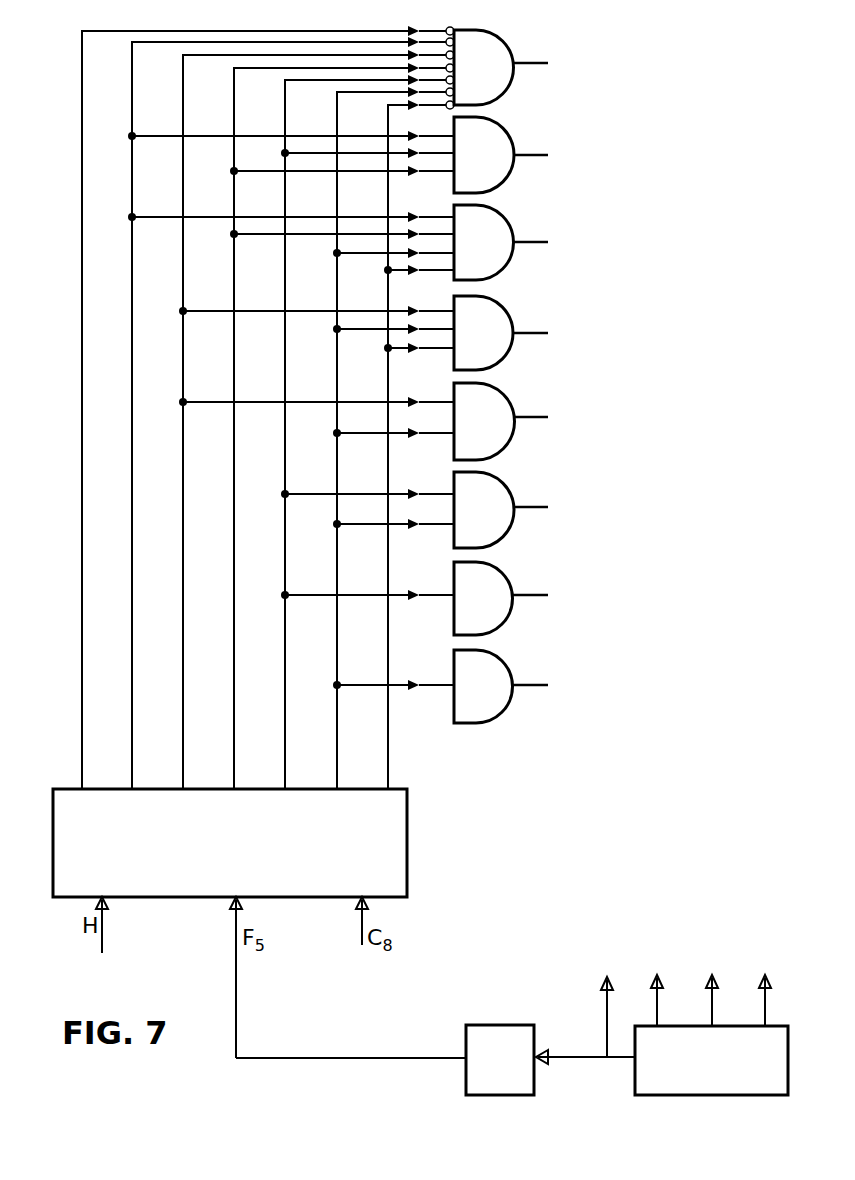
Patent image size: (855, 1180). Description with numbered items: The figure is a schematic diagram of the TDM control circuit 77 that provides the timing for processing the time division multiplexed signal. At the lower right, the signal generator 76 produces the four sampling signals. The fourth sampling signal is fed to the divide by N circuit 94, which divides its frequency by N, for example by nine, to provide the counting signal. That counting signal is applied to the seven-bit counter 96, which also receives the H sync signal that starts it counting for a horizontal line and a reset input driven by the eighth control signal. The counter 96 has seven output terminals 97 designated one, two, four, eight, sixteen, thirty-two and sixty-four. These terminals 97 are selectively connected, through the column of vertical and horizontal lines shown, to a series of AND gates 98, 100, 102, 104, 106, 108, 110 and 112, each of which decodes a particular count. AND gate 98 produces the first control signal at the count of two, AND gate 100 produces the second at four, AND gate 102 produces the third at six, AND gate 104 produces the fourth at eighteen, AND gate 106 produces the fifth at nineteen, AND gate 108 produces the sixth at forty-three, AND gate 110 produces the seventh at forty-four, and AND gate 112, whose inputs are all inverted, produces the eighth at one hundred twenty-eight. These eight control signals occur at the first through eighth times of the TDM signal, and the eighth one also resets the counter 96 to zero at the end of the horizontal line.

The AND gate 112 is at (497, 48).
The AND gate 110 is at (490, 138).
The AND gate 108 is at (503, 227).
The AND gate 106 is at (490, 317).
The AND gate 104 is at (498, 405).
The AND gate 102 is at (480, 490).
The AND gate 100 is at (500, 583).
The AND gate 98 is at (507, 672).
The output terminals 97 is at (80, 600).
The counter 96 is at (378, 846).
The divide by N circuit 94 is at (497, 1032).
The TDM control circuit 77 is at (620, 337).
The signal generator 76 is at (644, 1078).